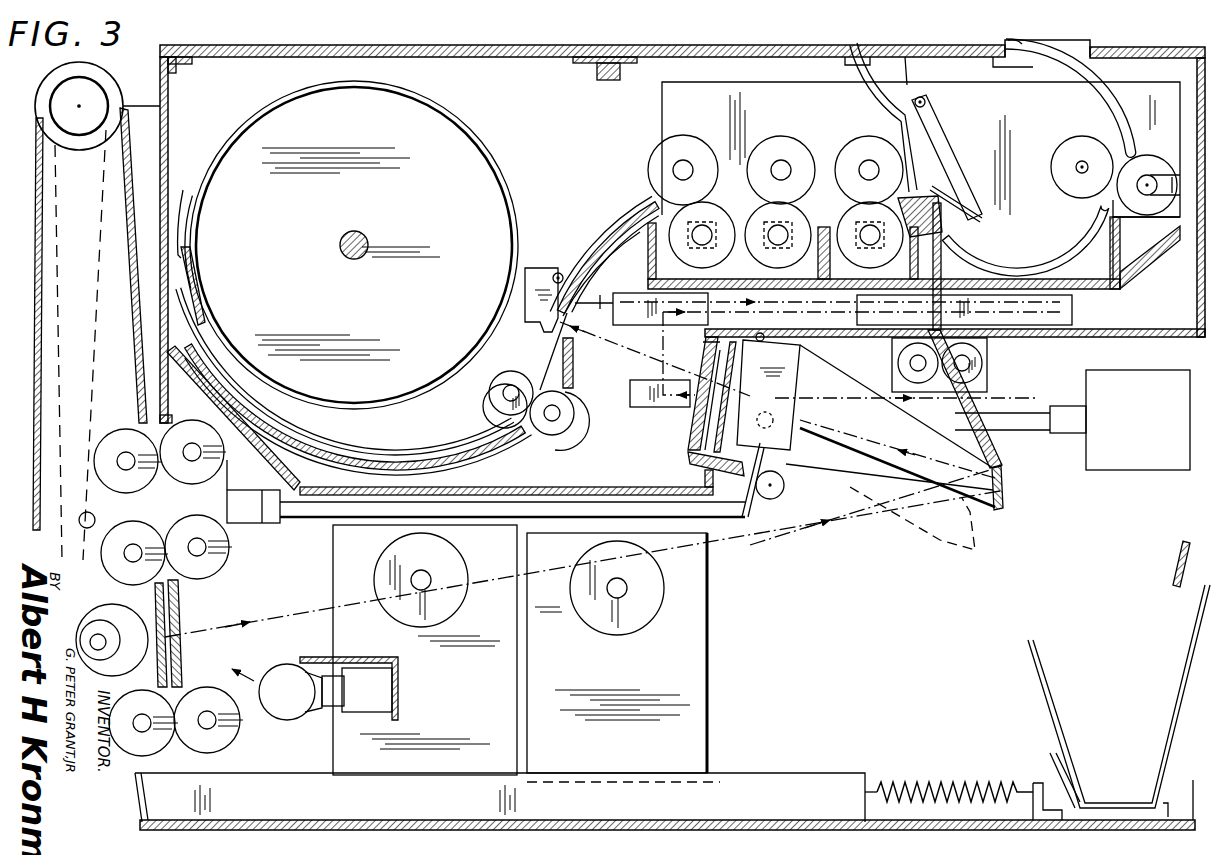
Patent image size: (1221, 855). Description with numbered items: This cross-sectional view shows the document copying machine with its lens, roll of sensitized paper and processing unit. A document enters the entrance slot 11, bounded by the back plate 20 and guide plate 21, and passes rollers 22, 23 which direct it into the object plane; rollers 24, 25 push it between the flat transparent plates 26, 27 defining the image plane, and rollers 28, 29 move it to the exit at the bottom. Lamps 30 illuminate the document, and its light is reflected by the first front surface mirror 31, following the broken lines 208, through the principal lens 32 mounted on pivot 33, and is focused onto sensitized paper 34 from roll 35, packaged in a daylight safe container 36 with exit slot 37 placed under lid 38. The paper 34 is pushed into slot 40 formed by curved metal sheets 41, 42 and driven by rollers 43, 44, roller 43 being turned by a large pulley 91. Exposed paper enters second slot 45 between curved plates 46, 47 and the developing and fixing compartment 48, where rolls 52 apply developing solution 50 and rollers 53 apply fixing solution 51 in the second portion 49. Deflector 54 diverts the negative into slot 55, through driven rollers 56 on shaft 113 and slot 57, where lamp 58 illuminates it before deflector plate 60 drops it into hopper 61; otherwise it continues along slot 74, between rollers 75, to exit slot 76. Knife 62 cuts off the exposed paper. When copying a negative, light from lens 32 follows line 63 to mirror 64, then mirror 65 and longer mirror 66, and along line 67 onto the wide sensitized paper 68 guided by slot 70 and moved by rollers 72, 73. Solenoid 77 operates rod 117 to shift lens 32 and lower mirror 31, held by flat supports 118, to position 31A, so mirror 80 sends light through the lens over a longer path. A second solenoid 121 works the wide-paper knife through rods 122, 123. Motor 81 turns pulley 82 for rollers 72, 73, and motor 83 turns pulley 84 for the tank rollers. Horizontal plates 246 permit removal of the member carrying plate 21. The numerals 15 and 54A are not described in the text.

The entrance slot 11 is at (148, 100).
The pivoted arm 15 is at (870, 44).
The back plate 20 is at (168, 152).
The guide plate 21 is at (136, 320).
The roller 22 is at (120, 432).
The roller 23 is at (192, 424).
The roller 24 is at (148, 524).
The roller 25 is at (228, 542).
The flat transparent plate 26 is at (170, 595).
The flat transparent plate 27 is at (182, 658).
The roller 28 is at (150, 748).
The roller 29 is at (232, 737).
The lamp 30 is at (290, 670).
The first front surface mirror 31 is at (1005, 500).
The mirror position 31A is at (920, 545).
The principal lens 32 is at (800, 352).
The pivot 33 is at (770, 308).
The sensitized paper 34 is at (200, 262).
The roll 35 is at (490, 175).
The daylight safe container 36 is at (483, 133).
The exit slot 37 is at (181, 227).
The lid 38 is at (480, 46).
The slot 40 is at (268, 430).
The curved metal sheet 41 is at (352, 455).
The curved metal sheet 42 is at (380, 458).
The driven roller 43 is at (508, 372).
The driven roller 44 is at (560, 400).
The second slot 45 is at (635, 215).
The curved plate 46 is at (588, 255).
The curved plate 47 is at (610, 248).
The developing and fixing compartment 48 is at (914, 206).
The second portion of compartment 49 is at (838, 278).
The developing solution 50 is at (740, 235).
The fixing solution 51 is at (870, 235).
The driven rolls 52 is at (752, 185).
The rollers 53 is at (846, 184).
The deflector 54 is at (965, 170).
The pivot 54A is at (926, 102).
The slot 55 is at (960, 204).
The driven rollers 56 is at (900, 362).
The slot 57 is at (968, 410).
The lamp 58 is at (786, 487).
The deflector plate 60 is at (985, 448).
The hopper 61 is at (1037, 702).
The knife 62 is at (534, 326).
The line 63 is at (830, 378).
The mirror 64 is at (646, 404).
The mirror 65 is at (638, 322).
The longer mirror 66 is at (1072, 310).
The line 67 is at (600, 308).
The second sheet of sensitized paper 68 is at (565, 268).
The slot 70 is at (612, 232).
The roller 72 is at (496, 426).
The roller 73 is at (582, 444).
The slot 74 is at (1020, 262).
The rollers 75 is at (1070, 140).
The exit slot 76 is at (1022, 44).
The solenoid 77 is at (1165, 462).
The mirror 80 is at (1180, 548).
The motor 81 is at (425, 650).
The pulley 82 is at (455, 568).
The motor 83 is at (623, 657).
The pulley 84 is at (653, 585).
The large pulley 91 is at (502, 395).
The shaft 113 is at (972, 368).
The rod 117 is at (1034, 412).
The flat supports 118 is at (1000, 466).
The second solenoid 121 is at (226, 490).
The rod 122 is at (736, 535).
The rod 123 is at (740, 510).
The broken lines 208 is at (855, 520).
The horizontal plates 246 is at (370, 785).